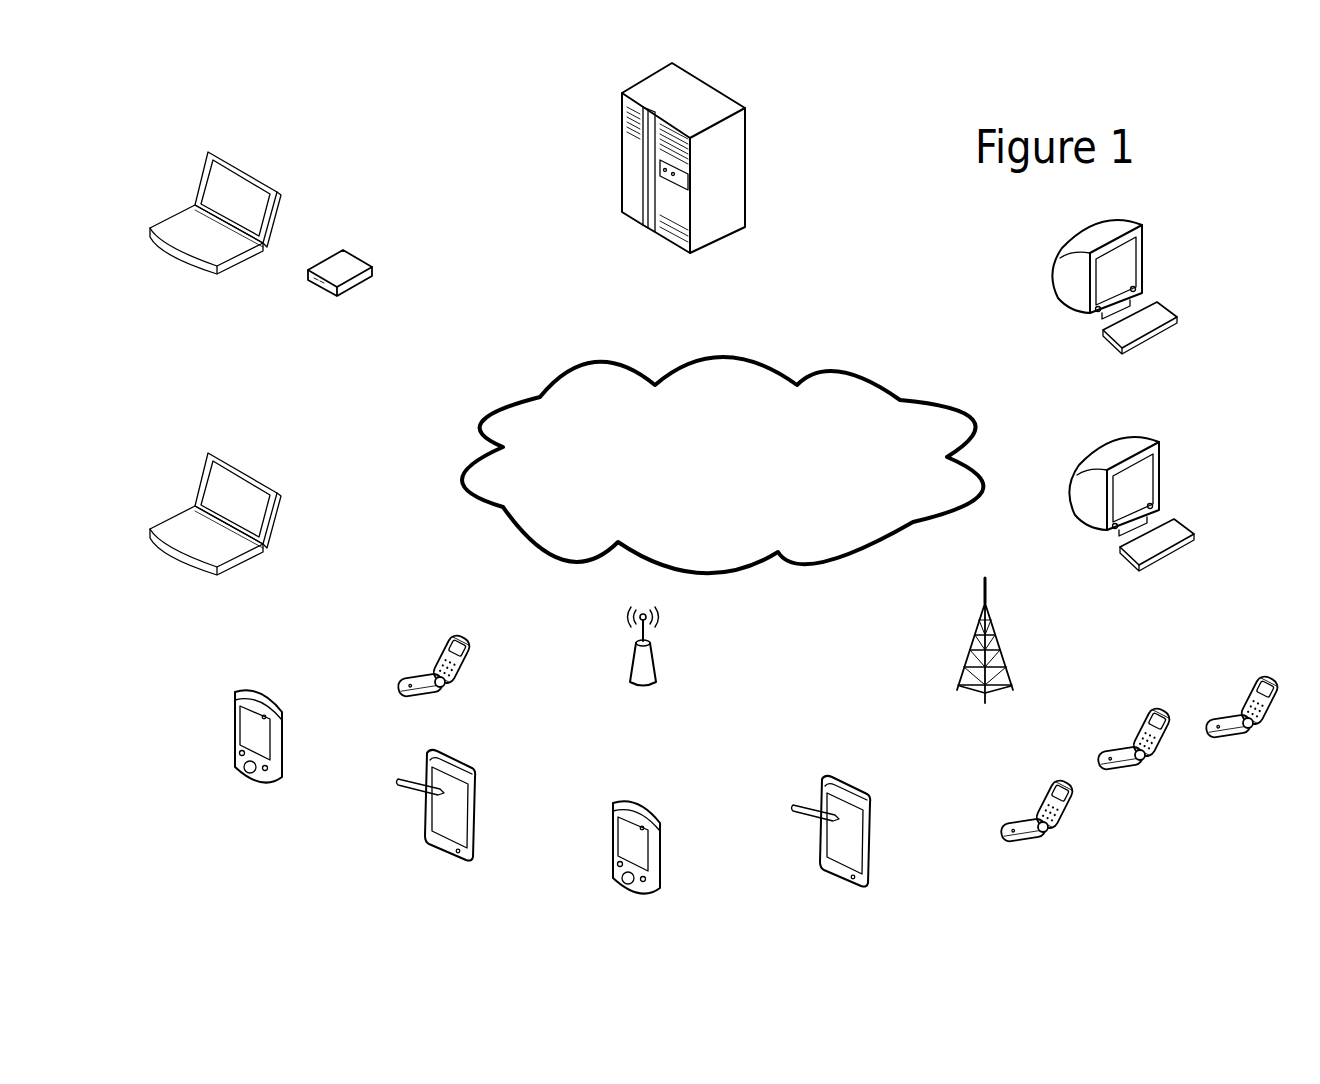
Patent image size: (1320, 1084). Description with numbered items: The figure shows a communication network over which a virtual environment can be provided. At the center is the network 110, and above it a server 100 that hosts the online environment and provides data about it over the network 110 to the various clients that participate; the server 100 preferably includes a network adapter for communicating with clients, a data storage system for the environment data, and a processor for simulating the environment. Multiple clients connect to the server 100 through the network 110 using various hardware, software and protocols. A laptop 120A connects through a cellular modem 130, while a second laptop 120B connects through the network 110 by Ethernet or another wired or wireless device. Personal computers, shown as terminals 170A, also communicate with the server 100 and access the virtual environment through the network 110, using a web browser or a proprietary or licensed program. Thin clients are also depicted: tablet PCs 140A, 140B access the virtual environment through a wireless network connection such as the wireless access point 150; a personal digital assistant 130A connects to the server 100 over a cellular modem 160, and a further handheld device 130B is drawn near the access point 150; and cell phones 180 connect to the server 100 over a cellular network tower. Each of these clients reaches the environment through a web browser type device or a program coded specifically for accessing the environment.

The server 100 is at (721, 355).
The network 110 is at (722, 465).
The laptop 120A is at (215, 224).
The laptop 120B is at (457, 465).
The cellular modem 130 is at (548, 373).
The personal digital assistant 130A is at (397, 695).
The handheld device 130B is at (636, 863).
The tablet PC 140A is at (633, 650).
The tablet PC 140B is at (797, 560).
The wireless access point 150 is at (717, 570).
The cellular modem 160 is at (557, 558).
The personal computer 170A is at (887, 378).
The cell phones 180 is at (993, 642).